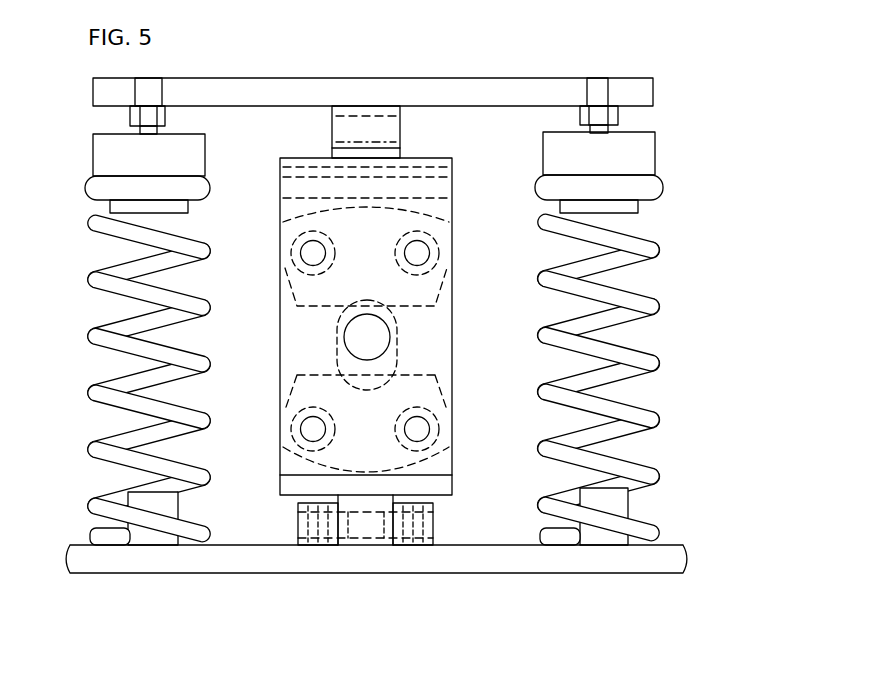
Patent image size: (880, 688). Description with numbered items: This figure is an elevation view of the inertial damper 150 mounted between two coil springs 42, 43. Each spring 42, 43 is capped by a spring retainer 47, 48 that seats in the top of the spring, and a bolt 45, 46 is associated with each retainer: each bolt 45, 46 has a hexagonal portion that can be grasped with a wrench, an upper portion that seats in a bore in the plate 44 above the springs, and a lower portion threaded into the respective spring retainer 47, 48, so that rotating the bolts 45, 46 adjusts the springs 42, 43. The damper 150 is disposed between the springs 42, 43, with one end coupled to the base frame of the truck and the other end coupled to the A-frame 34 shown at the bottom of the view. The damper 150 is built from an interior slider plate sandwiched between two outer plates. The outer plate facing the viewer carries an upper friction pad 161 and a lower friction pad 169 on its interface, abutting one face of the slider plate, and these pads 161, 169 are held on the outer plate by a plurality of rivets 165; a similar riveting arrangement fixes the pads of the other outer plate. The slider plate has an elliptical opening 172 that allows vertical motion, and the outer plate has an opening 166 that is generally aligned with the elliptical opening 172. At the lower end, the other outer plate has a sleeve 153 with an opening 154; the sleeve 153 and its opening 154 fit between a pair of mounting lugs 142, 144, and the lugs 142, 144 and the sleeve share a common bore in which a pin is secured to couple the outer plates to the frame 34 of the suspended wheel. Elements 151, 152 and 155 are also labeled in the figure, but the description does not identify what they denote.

The A-frame 34 is at (108, 573).
The spring 42 is at (655, 305).
The spring 43 is at (90, 270).
The plate 44 is at (536, 91).
The bolt 45 is at (618, 114).
The bolt 46 is at (124, 114).
The spring retainer 47 is at (648, 152).
The spring retainer 48 is at (93, 152).
The mounting lug 142 is at (310, 540).
The mounting lug 144 is at (430, 546).
The inertial damper 150 is at (451, 146).
The stud 151 is at (403, 116).
The stud bore 152 is at (350, 112).
The sleeve 153 is at (352, 540).
The opening 154 is at (385, 535).
The spacer hatching 155 is at (430, 512).
The upper friction pad 161 is at (292, 224).
The rivets 165 is at (311, 258).
The opening 166 is at (383, 344).
The lower friction pad 169 is at (287, 452).
The elliptical opening 172 is at (388, 316).